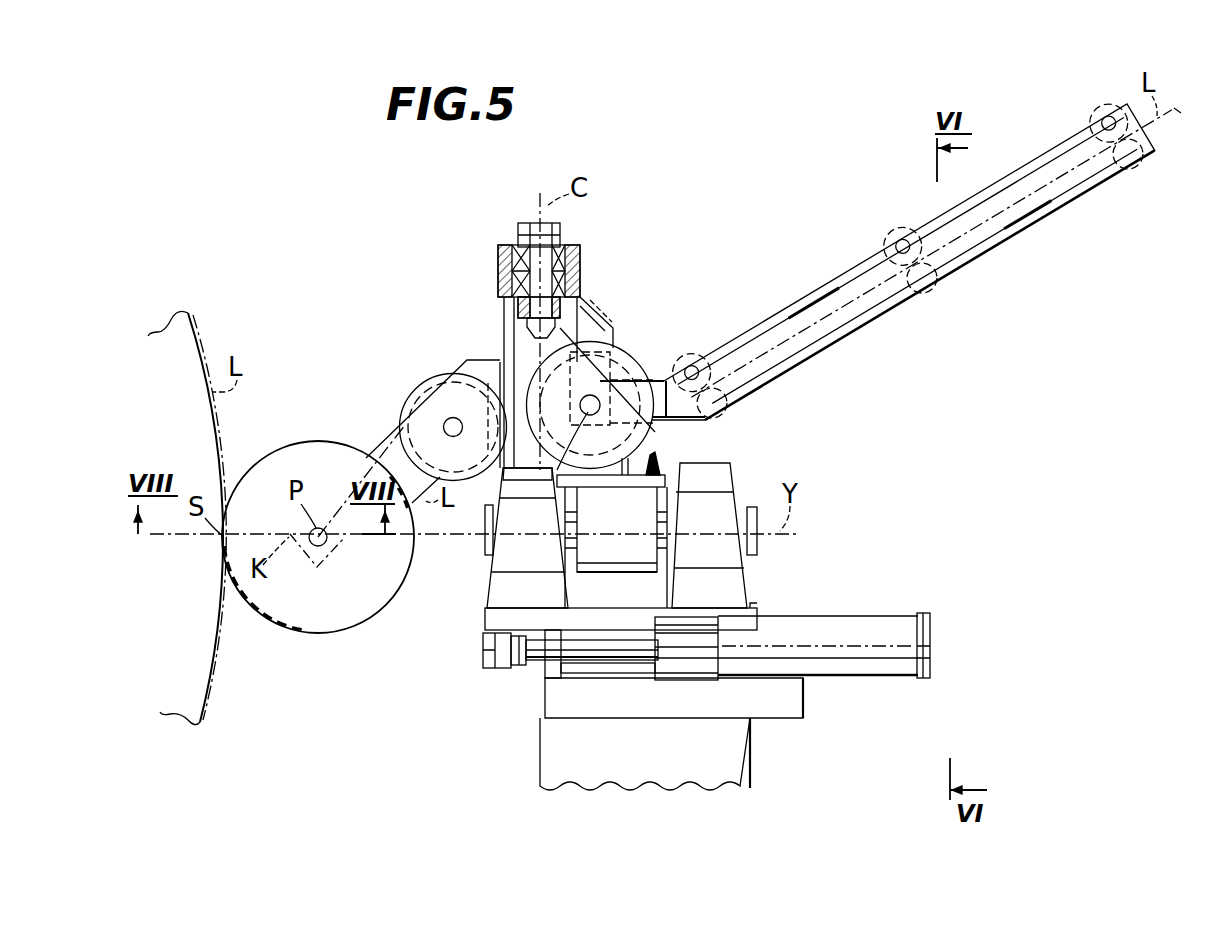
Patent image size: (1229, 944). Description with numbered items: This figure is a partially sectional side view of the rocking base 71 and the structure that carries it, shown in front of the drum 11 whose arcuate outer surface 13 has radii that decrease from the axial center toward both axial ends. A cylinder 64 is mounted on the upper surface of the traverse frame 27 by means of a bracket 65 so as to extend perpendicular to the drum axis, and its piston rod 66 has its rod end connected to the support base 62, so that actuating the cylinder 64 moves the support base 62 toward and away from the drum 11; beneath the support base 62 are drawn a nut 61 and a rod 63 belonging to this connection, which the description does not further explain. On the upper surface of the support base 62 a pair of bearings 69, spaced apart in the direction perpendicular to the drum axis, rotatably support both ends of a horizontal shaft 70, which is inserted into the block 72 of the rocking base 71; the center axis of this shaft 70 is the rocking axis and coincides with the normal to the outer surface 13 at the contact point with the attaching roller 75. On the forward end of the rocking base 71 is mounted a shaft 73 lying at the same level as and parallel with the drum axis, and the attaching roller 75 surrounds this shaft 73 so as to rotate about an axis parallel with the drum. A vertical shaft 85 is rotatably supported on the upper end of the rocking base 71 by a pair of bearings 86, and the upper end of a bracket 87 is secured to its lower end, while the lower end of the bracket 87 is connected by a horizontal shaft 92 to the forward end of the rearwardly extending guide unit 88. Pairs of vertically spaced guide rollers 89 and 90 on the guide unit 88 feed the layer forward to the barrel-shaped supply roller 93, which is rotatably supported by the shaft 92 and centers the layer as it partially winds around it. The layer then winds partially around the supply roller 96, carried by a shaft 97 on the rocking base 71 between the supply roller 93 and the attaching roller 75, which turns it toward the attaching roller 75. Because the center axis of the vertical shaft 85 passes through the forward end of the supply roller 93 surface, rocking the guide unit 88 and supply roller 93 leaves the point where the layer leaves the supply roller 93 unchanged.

The drum 11 is at (180, 346).
The outer surface 13 is at (215, 684).
The traverse frame 27 is at (735, 766).
The adjusting nut 61 is at (534, 681).
The support base 62 is at (757, 610).
The adjusting rod 63 is at (598, 674).
The cylinder 64 is at (876, 627).
The bracket 65 is at (704, 670).
The piston rod 66 is at (652, 680).
The bearings 69 is at (722, 462).
The horizontal shaft 70 is at (661, 558).
The rocking base 71 is at (668, 440).
The block 72 is at (612, 562).
The shaft 73 is at (323, 548).
The attaching roller 75 is at (326, 442).
The shaft 85 is at (512, 306).
The bearings 86 is at (498, 262).
The bracket 87 is at (610, 326).
The guide unit 88 is at (1012, 168).
The guide rollers 89 is at (1103, 110).
The guide rollers 90 is at (1137, 156).
The horizontal shaft 92 is at (552, 484).
The supply roller 93 is at (636, 358).
The supply roller 96 is at (460, 376).
The shaft 97 is at (446, 420).